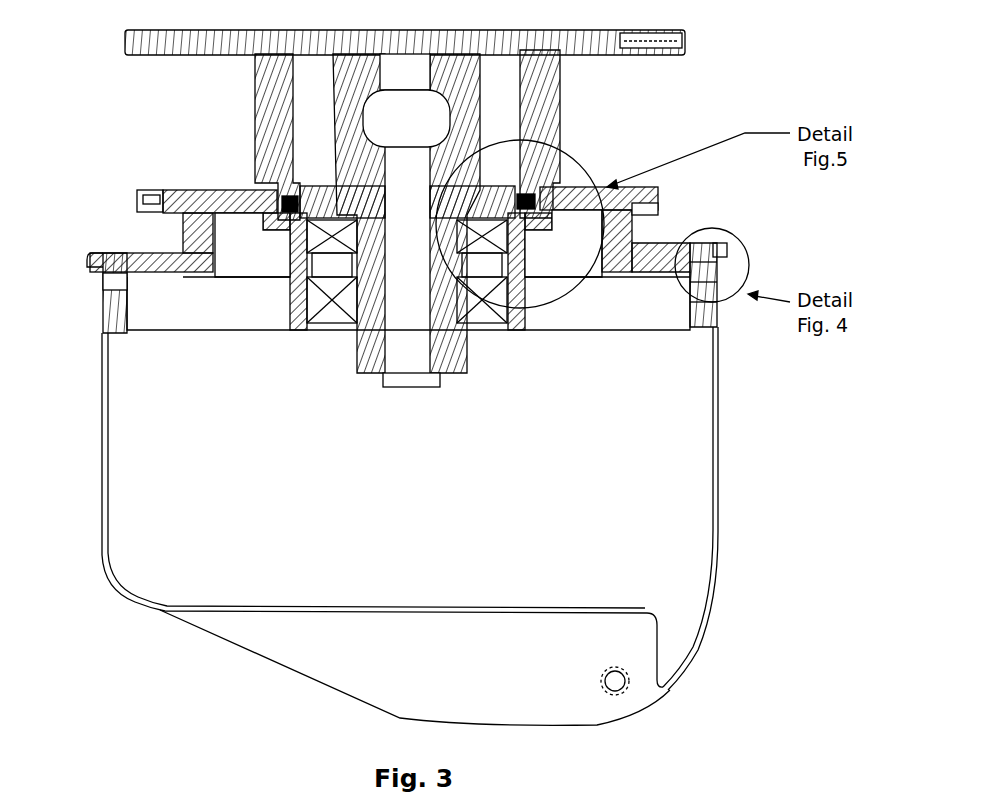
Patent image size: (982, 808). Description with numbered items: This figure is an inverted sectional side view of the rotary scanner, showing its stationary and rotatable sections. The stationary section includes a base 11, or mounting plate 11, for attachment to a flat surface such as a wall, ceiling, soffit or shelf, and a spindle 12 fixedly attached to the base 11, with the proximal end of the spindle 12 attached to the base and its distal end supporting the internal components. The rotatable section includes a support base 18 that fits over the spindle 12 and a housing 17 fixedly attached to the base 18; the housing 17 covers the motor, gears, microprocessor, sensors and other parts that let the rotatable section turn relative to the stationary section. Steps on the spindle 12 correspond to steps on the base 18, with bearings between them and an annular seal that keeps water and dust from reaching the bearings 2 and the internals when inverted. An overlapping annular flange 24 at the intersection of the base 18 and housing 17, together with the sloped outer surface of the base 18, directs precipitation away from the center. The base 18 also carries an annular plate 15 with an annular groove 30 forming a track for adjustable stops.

The base 11 is at (685, 38).
The spindle 12 is at (538, 218).
The annular plate 15 is at (178, 213).
The support base 18 is at (643, 218).
The annular groove 30 is at (155, 190).
The bearing 2 is at (558, 303).
The housing 17 is at (733, 435).
The overlapping annular flange 24 is at (100, 258).